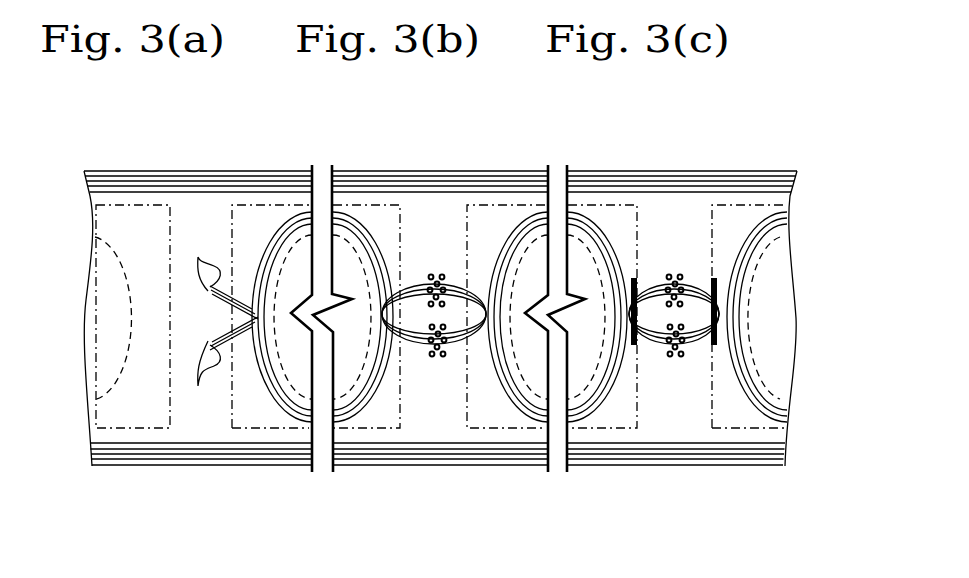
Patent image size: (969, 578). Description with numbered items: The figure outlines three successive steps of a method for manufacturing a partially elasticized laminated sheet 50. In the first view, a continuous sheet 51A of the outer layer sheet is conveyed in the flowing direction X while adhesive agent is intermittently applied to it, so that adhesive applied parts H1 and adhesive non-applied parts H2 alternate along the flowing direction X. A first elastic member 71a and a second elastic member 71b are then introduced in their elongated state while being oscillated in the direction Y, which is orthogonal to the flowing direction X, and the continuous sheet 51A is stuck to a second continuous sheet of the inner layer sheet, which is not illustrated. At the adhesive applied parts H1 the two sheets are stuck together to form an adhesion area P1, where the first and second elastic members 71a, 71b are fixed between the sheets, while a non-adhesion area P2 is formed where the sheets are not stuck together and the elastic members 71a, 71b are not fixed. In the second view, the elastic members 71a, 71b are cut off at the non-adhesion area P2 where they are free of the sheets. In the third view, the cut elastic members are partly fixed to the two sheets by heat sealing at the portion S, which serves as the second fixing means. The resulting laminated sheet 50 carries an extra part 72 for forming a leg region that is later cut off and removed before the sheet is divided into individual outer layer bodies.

In FIG. 3C, the partially elasticized laminated sheet 50 is at (778, 162).
In FIG. 3A, the continuous sheet of the outer layer sheet 51A is at (183, 215).
In FIG. 3A, the first elastic member 71a is at (217, 273).
In FIG. 3A, the second elastic member 71b is at (217, 375).
In FIG. 3C, the extra part for forming a leg region 72 is at (777, 285).
In FIG. 3A, the adhesive applied part H1 is at (118, 215).
In FIG. 3A, the adhesive non-applied part H2 is at (219, 215).
In FIG. 3B, the adhesion area P1 is at (368, 216).
In FIG. 3C, the adhesion area P1 is at (610, 214).
In FIG. 3B, the non-adhesion area P2 is at (440, 218).
In FIG. 3C, the non-adhesion area P2 is at (683, 383).
In FIG. 3C, the heat sealing portion S is at (714, 276).
In FIG. 3B, the flowing direction X is at (655, 514).
In FIG. 3A, the oscillating direction Y is at (73, 258).